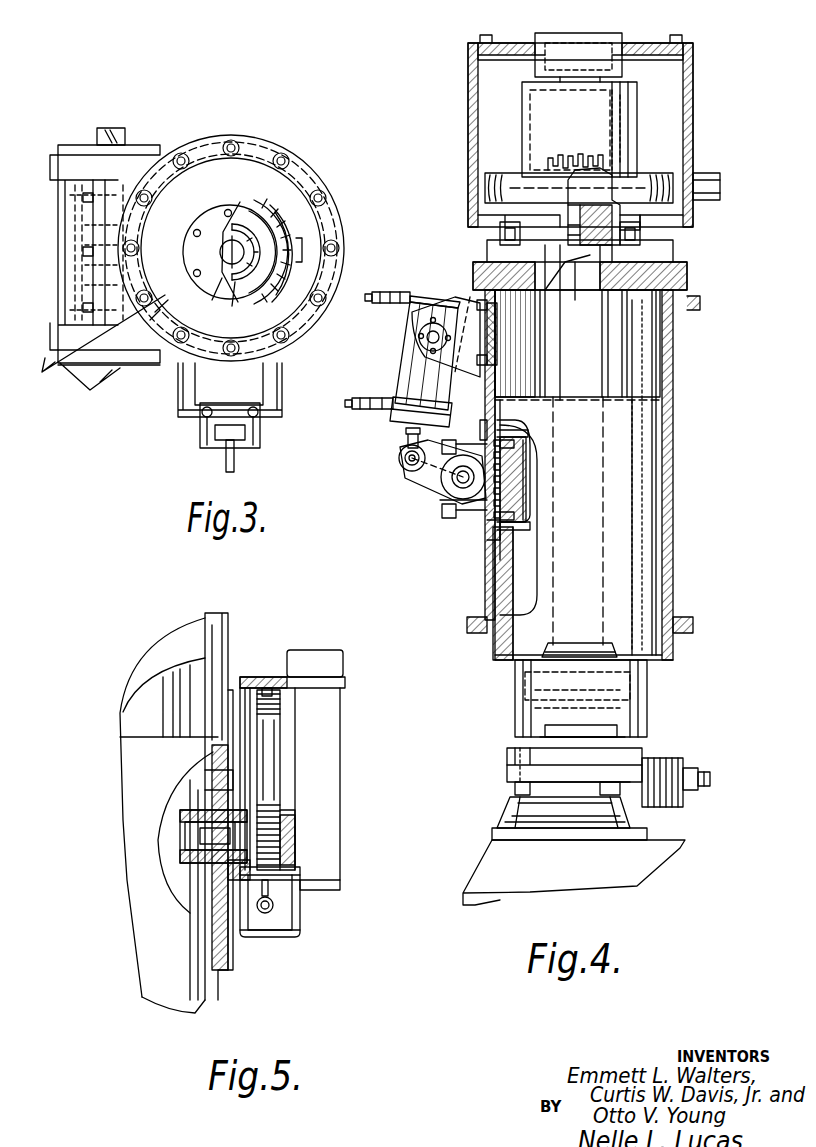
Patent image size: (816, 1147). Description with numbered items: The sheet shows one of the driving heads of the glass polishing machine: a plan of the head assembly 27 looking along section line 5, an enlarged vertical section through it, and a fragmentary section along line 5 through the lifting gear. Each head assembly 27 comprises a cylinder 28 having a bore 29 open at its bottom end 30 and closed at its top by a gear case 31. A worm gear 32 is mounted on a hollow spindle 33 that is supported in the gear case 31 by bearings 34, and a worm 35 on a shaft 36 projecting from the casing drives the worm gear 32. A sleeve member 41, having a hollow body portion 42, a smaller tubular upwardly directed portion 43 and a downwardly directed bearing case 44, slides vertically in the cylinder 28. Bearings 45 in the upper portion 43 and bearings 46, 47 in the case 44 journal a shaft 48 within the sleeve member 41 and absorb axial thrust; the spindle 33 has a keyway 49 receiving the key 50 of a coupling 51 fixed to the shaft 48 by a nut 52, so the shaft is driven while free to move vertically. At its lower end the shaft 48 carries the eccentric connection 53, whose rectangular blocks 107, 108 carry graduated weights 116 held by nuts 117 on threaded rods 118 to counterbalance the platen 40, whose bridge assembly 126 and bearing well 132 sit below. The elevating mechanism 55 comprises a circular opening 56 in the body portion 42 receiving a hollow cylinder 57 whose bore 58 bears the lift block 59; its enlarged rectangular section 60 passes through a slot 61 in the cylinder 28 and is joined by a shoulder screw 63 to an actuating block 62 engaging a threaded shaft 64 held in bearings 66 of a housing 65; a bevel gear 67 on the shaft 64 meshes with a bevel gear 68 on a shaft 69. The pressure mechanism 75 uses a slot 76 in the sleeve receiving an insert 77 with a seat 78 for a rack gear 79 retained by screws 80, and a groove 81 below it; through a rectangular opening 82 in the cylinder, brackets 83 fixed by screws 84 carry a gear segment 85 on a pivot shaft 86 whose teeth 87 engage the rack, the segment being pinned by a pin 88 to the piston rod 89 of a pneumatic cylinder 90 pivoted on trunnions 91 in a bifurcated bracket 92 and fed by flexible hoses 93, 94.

In FIG. 3, the section line 5- 5 is at (103, 326).
In FIG. 3, the head assembly 27 is at (312, 156).
In FIG. 4, the head assembly 27 is at (449, 132).
In FIG. 4, the cylinder 28 is at (673, 434).
In FIG. 5, the cylinder 28 is at (216, 640).
In FIG. 4, the bore 29 is at (683, 567).
In FIG. 4, the bottom end 30 is at (664, 645).
In FIG. 4, the gear case 31 is at (692, 95).
In FIG. 3, the worm gear 32 is at (254, 160).
In FIG. 4, the worm gear 32 is at (655, 173).
In FIG. 3, the hollow spindle 33 is at (262, 248).
In FIG. 4, the hollow spindle 33 is at (616, 136).
In FIG. 3, the bearings 34 is at (221, 210).
In FIG. 4, the bearings 34 is at (622, 40).
In FIG. 3, the worm 35 is at (80, 270).
In FIG. 4, the worm 35 is at (572, 150).
In FIG. 3, the shaft 36 is at (124, 135).
In FIG. 4, the shaft 36 is at (712, 175).
In FIG. 4, the polishing platen 40 is at (502, 868).
In FIG. 4, the sleeve member 41 is at (645, 480).
In FIG. 5, the sleeve member 41 is at (144, 952).
In FIG. 4, the hollow body portion 42 is at (620, 530).
In FIG. 5, the hollow body portion 42 is at (172, 968).
In FIG. 4, the tubular upwardly directed portion 43 is at (612, 365).
In FIG. 4, the bearing case 44 is at (640, 690).
In FIG. 4, the bearings 45 is at (688, 272).
In FIG. 4, the bearings 46 is at (520, 684).
In FIG. 4, the bearings 47 is at (545, 731).
In FIG. 3, the shaft 48 is at (228, 250).
In FIG. 4, the shaft 48 is at (605, 290).
In FIG. 3, the keyway 49 is at (300, 248).
In FIG. 4, the keyway 49 is at (640, 220).
In FIG. 3, the key 50 is at (262, 248).
In FIG. 4, the key 50 is at (606, 215).
In FIG. 3, the coupling 51 is at (290, 235).
In FIG. 3, the nut 52 is at (236, 290).
In FIG. 4, the eccentric connection 53 is at (497, 770).
In FIG. 3, the elevating mechanism 55 is at (88, 384).
In FIG. 5, the elevating mechanism 55 is at (337, 777).
In FIG. 5, the circular opening 56 is at (215, 868).
In FIG. 5, the hollow cylinder 57 is at (195, 820).
In FIG. 5, the bore 58 is at (172, 835).
In FIG. 5, the lift block 59 is at (192, 838).
In FIG. 5, the enlarged rectangular section 60 is at (228, 810).
In FIG. 5, the slot 61 is at (204, 718).
In FIG. 5, the actuating block 62 is at (290, 822).
In FIG. 5, the shoulder screw 63 is at (210, 855).
In FIG. 5, the threaded shaft 64 is at (272, 745).
In FIG. 5, the housing 65 is at (325, 748).
In FIG. 5, the bearings 66 is at (265, 686).
In FIG. 5, the bevel gear 67 is at (298, 905).
In FIG. 5, the bevel gear 68 is at (298, 928).
In FIG. 5, the shaft 69 is at (268, 912).
In FIG. 3, the pressure regulating mechanism 75 is at (170, 427).
In FIG. 4, the pressure regulating mechanism 75 is at (385, 378).
In FIG. 4, the slot 76 is at (512, 526).
In FIG. 4, the insert 77 is at (528, 462).
In FIG. 4, the seat 78 is at (530, 494).
In FIG. 4, the rack gear 79 is at (528, 480).
In FIG. 4, the screws 80 is at (512, 444).
In FIG. 4, the groove 81 is at (500, 578).
In FIG. 4, the rectangular opening 82 is at (485, 428).
In FIG. 4, the brackets 83 is at (490, 528).
In FIG. 4, the screws 84 is at (456, 530).
In FIG. 4, the gear segment 85 is at (450, 503).
In FIG. 4, the pivot shaft 86 is at (445, 482).
In FIG. 4, the teeth 87 is at (497, 556).
In FIG. 4, the pin 88 is at (400, 465).
In FIG. 4, the piston rod 89 is at (406, 438).
In FIG. 3, the pneumatic cylinder 90 is at (210, 433).
In FIG. 4, the pneumatic cylinder 90 is at (412, 362).
In FIG. 4, the trunnions 91 is at (418, 331).
In FIG. 3, the bifurcated bracket 92 is at (182, 395).
In FIG. 4, the bifurcated bracket 92 is at (458, 296).
In FIG. 3, the flexible hose 93 is at (236, 464).
In FIG. 4, the flexible hose 93 is at (382, 292).
In FIG. 4, the flexible hose 94 is at (358, 410).
In FIG. 4, the rectangular block 107 is at (535, 760).
In FIG. 4, the rectangular block 108 is at (545, 775).
In FIG. 4, the graduated weights 116 is at (675, 770).
In FIG. 4, the nuts 117 is at (698, 772).
In FIG. 4, the threaded rods 118 is at (712, 779).
In FIG. 4, the bridge assembly 126 is at (668, 859).
In FIG. 4, the bearing well 132 is at (658, 819).